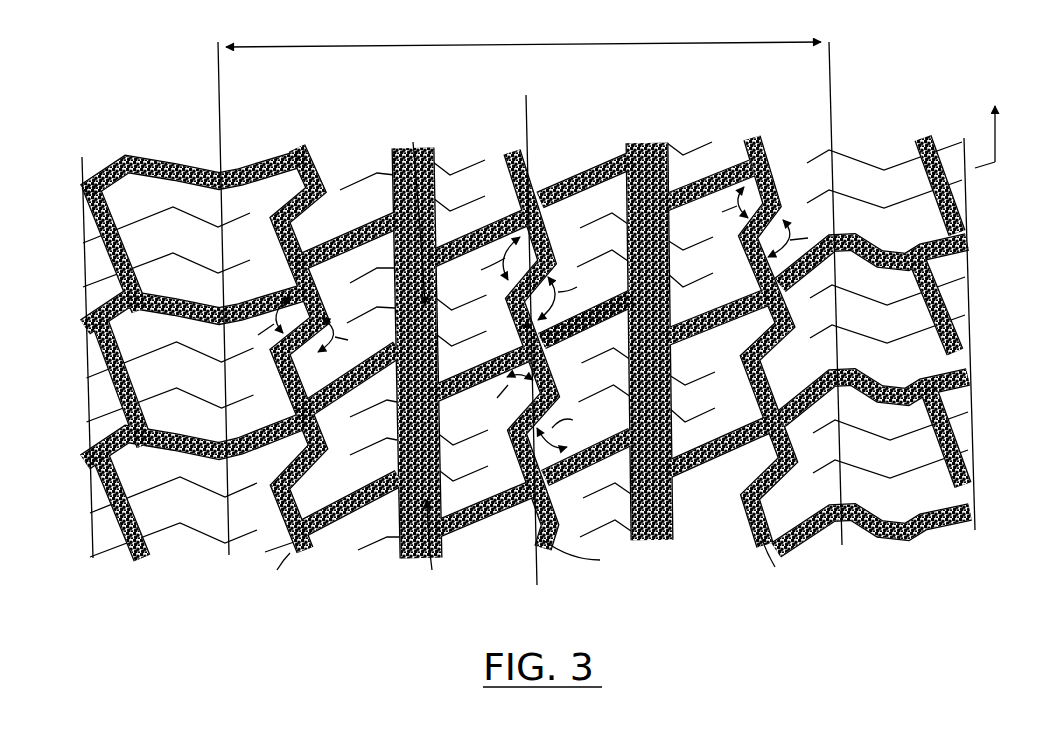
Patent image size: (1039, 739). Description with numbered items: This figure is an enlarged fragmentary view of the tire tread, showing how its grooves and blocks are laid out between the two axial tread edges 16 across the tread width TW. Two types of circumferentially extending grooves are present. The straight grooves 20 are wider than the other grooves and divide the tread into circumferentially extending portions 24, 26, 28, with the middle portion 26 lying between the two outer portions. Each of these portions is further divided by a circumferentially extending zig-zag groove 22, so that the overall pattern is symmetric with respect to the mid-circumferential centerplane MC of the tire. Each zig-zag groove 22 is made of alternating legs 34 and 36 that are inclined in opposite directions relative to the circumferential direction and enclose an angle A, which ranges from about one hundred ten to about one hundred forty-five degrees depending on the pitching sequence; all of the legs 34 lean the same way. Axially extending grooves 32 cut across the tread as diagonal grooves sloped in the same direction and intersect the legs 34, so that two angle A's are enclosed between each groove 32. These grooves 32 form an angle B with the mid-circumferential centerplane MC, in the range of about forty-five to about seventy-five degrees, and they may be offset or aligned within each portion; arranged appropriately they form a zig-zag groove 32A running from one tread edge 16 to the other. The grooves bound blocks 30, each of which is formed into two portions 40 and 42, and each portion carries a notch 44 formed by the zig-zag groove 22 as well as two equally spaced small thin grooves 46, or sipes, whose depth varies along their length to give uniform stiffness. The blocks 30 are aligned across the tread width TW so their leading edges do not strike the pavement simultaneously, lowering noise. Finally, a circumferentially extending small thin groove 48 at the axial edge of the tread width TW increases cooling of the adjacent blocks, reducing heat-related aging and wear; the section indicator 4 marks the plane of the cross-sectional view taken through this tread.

The axial tread edge 16 is at (82, 257).
The straight circumferentially extending groove 20 is at (412, 537).
The zig-zag circumferentially extending groove 22 is at (527, 564).
The circumferentially extending portion 24 is at (327, 147).
The circumferentially extending portion 26 is at (483, 137).
The circumferentially extending portion 28 is at (763, 127).
The block 30 is at (413, 148).
The axially extending groove 32 is at (232, 444).
The zig-zag groove 32A is at (97, 465).
The leg of zig-zag groove 34 is at (765, 152).
The leg of zig-zag groove 36 is at (777, 203).
The block portion 40 is at (740, 425).
The block portion 42 is at (817, 357).
The notch 44 is at (280, 196).
The small thin groove 46 is at (617, 288).
The circumferentially extending small thin groove 48 is at (218, 154).
The mid-circumferential centerplane MC is at (527, 103).
The tread width TW is at (548, 40).
The section line 4- 4 is at (746, 222).
The angle A is at (534, 271).
The angle B is at (539, 411).